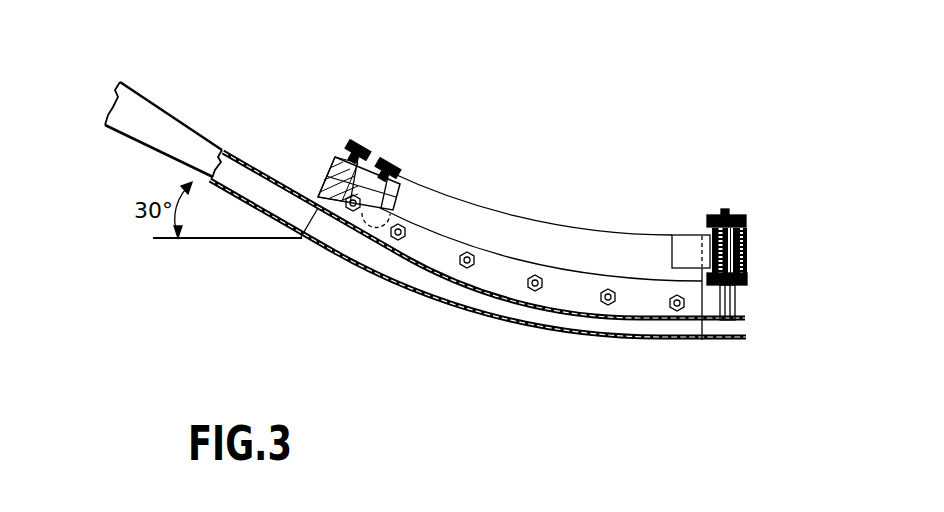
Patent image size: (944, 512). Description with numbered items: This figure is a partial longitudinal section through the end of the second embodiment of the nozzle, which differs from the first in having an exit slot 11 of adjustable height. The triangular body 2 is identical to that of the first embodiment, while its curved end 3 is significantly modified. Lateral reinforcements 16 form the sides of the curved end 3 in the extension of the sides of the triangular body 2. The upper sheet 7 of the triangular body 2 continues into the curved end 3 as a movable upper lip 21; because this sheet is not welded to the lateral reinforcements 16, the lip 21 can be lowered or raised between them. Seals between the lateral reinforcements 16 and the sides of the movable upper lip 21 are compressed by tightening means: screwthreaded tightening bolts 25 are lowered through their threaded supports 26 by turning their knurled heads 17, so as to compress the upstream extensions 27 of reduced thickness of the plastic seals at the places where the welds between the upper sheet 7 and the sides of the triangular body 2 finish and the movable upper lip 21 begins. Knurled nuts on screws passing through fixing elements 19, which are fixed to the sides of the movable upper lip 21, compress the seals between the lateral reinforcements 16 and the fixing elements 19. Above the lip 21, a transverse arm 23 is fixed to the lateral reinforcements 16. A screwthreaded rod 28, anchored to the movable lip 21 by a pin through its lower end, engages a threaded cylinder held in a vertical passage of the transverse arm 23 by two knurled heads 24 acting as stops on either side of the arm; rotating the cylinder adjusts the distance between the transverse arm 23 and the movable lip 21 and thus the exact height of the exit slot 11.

The triangular body 2 is at (182, 117).
The upper sheet 7 is at (229, 150).
The curved end 3 is at (518, 324).
The lateral reinforcements 16 is at (594, 230).
The fixing elements 19 is at (495, 268).
The knurled heads 17 is at (352, 147).
The upstream extensions 27 is at (307, 192).
The tightening bolts 25 is at (325, 188).
The threaded supports 26 is at (410, 183).
The transverse arm 23 is at (693, 252).
The screwthreaded rod 28 is at (724, 209).
The knurled heads 24 is at (747, 220).
The movable upper lip 21 is at (745, 317).
The exit slot 11 is at (738, 328).